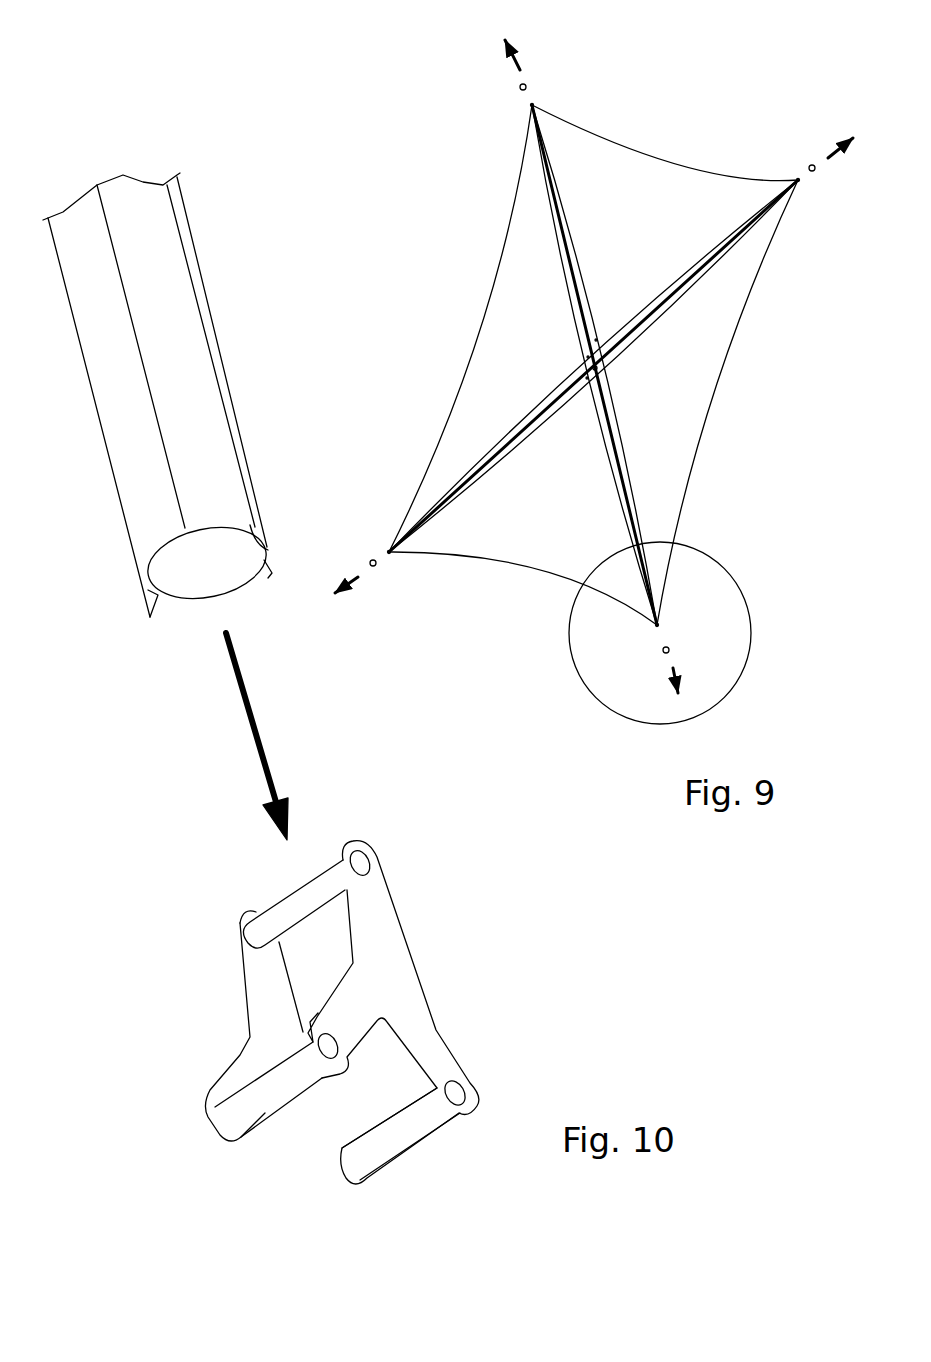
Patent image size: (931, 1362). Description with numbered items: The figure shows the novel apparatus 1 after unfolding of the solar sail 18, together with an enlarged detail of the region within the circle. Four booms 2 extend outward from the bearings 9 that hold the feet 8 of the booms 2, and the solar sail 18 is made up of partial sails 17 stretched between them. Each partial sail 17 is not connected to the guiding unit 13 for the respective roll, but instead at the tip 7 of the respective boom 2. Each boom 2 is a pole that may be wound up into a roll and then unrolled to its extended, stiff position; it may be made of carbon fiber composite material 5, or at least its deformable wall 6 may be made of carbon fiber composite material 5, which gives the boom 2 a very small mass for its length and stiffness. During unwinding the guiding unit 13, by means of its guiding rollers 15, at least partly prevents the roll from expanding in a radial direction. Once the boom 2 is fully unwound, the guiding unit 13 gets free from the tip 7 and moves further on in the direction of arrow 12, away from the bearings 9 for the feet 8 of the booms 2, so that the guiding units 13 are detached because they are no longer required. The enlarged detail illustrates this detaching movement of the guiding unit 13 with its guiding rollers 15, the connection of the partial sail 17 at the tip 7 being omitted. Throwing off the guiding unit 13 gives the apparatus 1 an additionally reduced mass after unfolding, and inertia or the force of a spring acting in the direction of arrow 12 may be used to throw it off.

In FIG. 9, the apparatus 1 is at (482, 210).
In FIG. 9, the boom 2 is at (550, 175).
In FIG. 9, the carbon fiber composite material 5 is at (265, 560).
In FIG. 9, the deformable wall 6 is at (272, 573).
In FIG. 9, the tip 7 is at (532, 105).
In FIG. 9, the feet 8 is at (587, 378).
In FIG. 9, the bearings 9 is at (600, 367).
In FIG. 9, the arrow 12 is at (517, 60).
In FIG. 9, the guiding unit 13 is at (523, 87).
In FIG. 10, the guiding unit 13 is at (420, 978).
In FIG. 10, the guiding rollers 15 is at (297, 900).
In FIG. 9, the partial sail 17 is at (638, 203).
In FIG. 9, the solar sail 18 is at (485, 255).